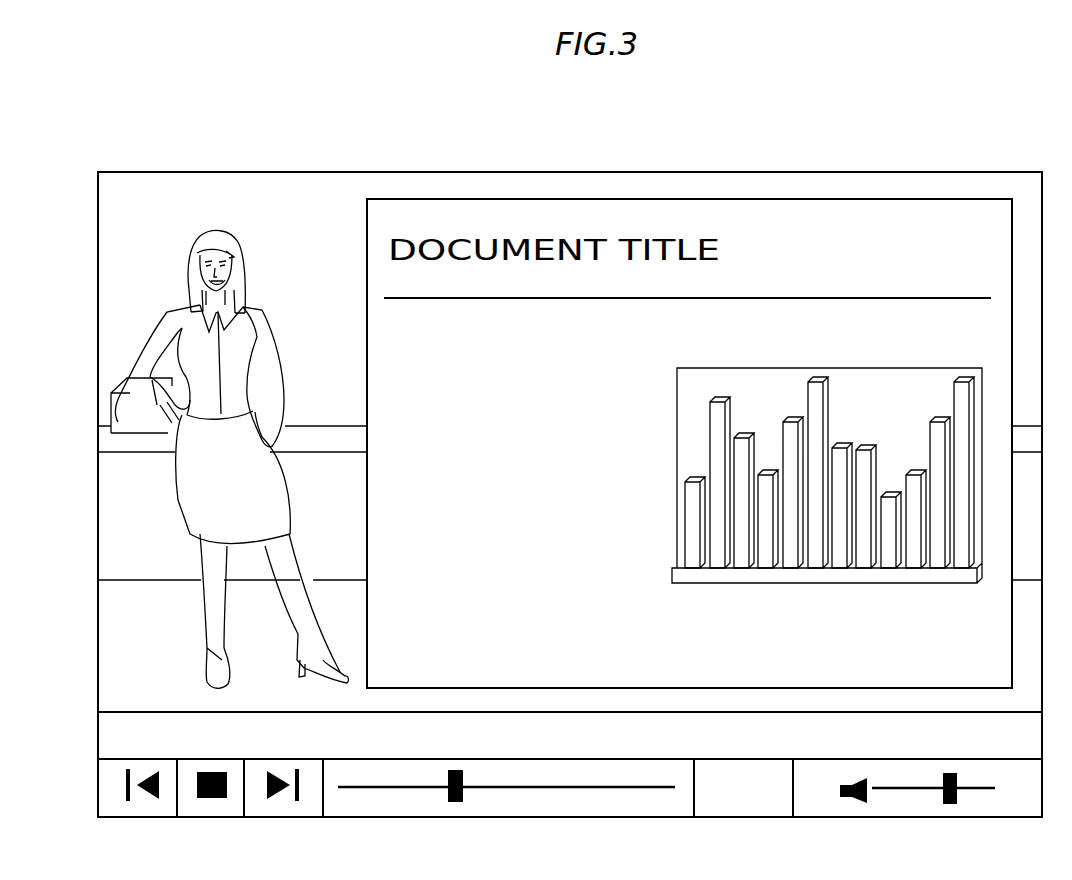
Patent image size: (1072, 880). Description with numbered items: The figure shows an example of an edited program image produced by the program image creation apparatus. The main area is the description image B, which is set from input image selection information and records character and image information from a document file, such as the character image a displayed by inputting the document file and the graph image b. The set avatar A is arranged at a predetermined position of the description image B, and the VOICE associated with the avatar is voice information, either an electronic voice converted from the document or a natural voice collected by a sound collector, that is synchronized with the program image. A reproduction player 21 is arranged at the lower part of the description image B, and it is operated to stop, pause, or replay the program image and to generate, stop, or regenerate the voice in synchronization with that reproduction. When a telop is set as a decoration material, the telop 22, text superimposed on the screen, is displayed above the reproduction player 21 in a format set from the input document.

The avatar A is at (167, 328).
The description image B is at (172, 612).
The voice VOICE is at (243, 258).
The character image a is at (578, 400).
The graph image b is at (912, 390).
The reproduction player 21 is at (112, 770).
The telop 22 is at (417, 726).